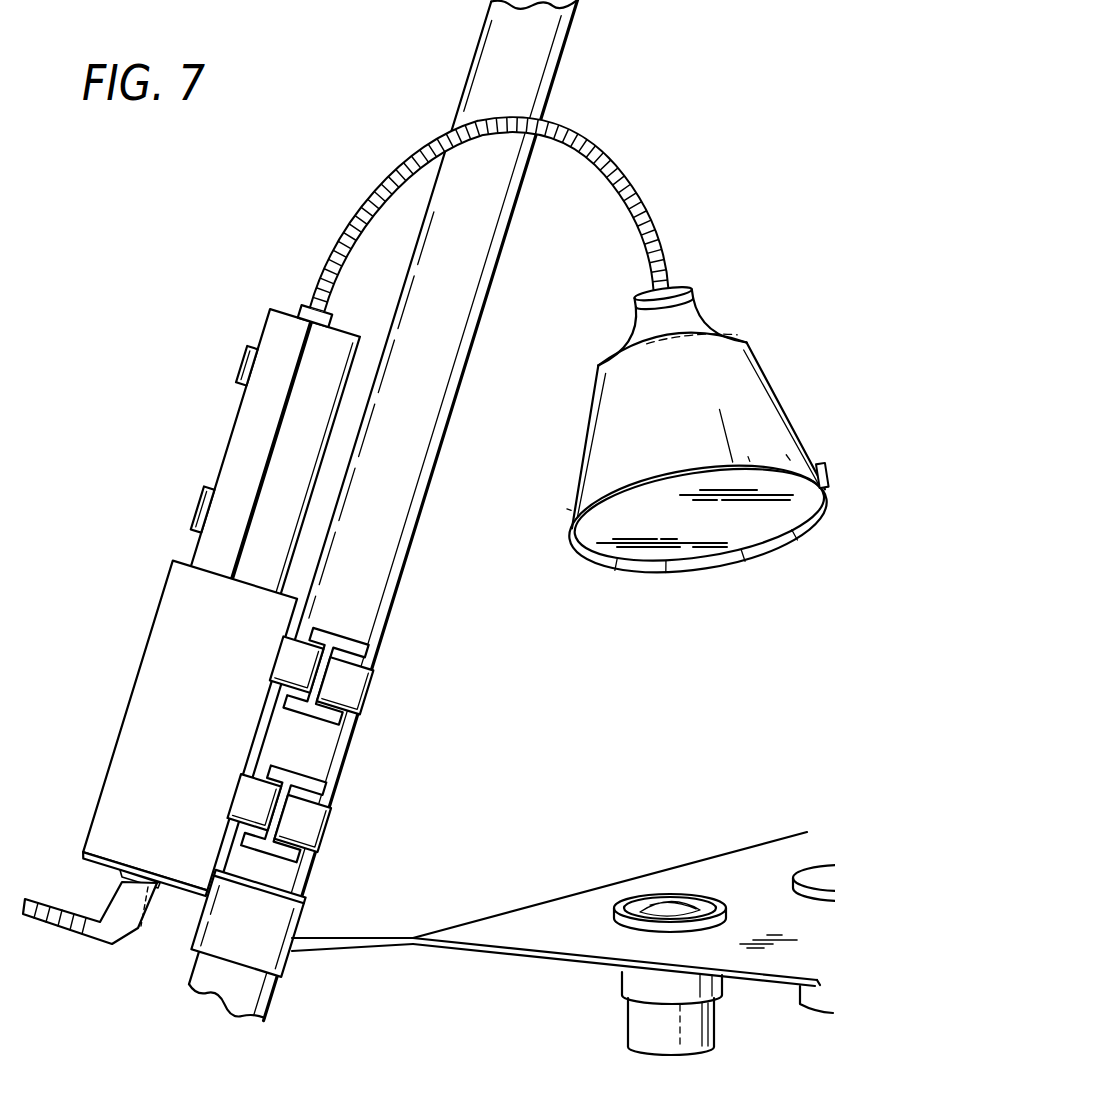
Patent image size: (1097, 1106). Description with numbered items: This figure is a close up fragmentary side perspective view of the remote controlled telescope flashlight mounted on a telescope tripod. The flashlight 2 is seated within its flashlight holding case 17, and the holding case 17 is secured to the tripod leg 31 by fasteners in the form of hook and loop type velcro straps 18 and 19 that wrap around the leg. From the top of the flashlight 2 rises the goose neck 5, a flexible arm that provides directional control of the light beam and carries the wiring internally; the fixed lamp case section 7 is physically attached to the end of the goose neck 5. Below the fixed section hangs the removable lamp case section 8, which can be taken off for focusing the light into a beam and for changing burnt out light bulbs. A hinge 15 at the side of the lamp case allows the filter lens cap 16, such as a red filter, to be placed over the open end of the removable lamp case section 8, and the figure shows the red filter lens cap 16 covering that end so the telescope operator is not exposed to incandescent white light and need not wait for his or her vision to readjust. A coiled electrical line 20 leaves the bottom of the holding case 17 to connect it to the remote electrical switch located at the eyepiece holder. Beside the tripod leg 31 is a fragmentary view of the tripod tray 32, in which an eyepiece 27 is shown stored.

The flashlight 2 is at (273, 345).
The goose neck 5 is at (396, 178).
The fixed lamp case section 7 is at (693, 320).
The removable lamp case section 8 is at (635, 418).
The hinge 15 is at (827, 470).
The filter lens cap 16 is at (703, 525).
The flashlight holding case 17 is at (202, 720).
The velcro strap 18 is at (338, 647).
The velcro strap 19 is at (298, 787).
The coiled electrical line 20 is at (42, 921).
The eyepiece 27 is at (653, 1020).
The tripod leg 31 is at (523, 63).
The tripod tray 32 is at (553, 917).